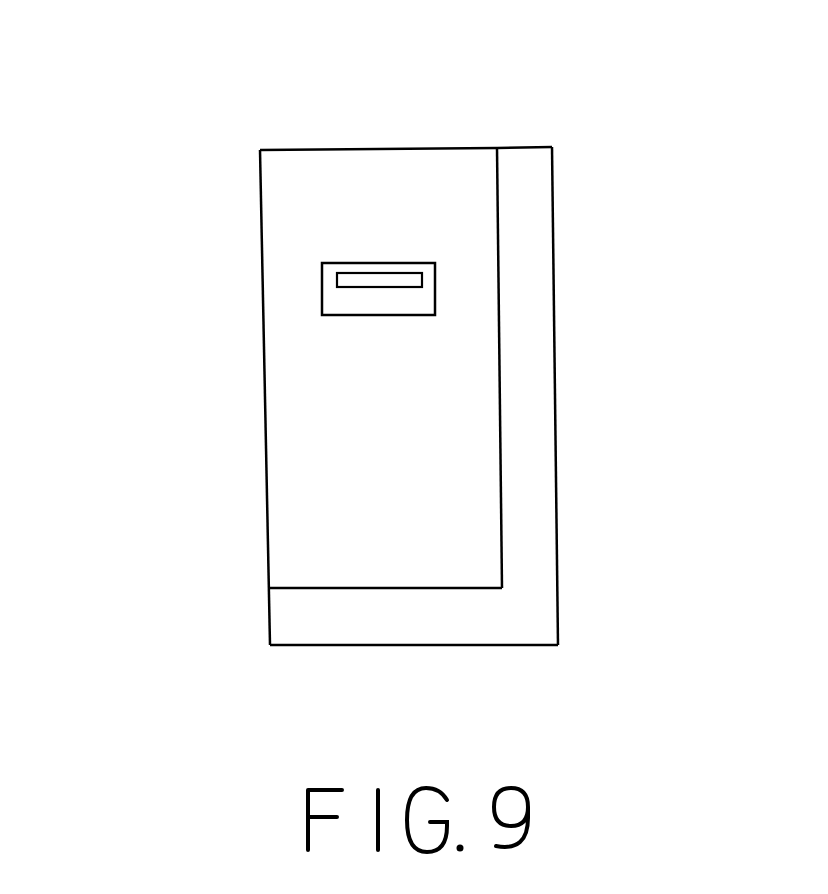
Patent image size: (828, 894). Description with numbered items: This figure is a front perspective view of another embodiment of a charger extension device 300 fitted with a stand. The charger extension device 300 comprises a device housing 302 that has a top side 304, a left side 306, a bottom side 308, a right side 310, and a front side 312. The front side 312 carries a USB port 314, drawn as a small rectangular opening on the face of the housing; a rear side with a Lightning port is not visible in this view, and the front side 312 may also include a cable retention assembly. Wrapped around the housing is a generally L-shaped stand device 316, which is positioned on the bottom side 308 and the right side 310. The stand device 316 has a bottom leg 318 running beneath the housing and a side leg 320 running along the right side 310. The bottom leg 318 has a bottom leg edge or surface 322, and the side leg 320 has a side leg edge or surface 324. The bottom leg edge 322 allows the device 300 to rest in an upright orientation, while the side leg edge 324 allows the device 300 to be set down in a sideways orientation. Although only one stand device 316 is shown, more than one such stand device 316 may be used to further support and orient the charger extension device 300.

The charger extension device 300 is at (440, 80).
The device housing 302 is at (162, 414).
The top side 304 is at (298, 148).
The left side 306 is at (260, 213).
The bottom side 308 is at (353, 586).
The right side 310 is at (500, 405).
The front side 312 is at (290, 471).
The USB port 314 is at (360, 243).
The stand device 316 is at (588, 303).
The bottom leg 318 is at (392, 623).
The side leg 320 is at (535, 430).
The bottom leg edge 322 is at (475, 645).
The side leg edge 324 is at (557, 511).